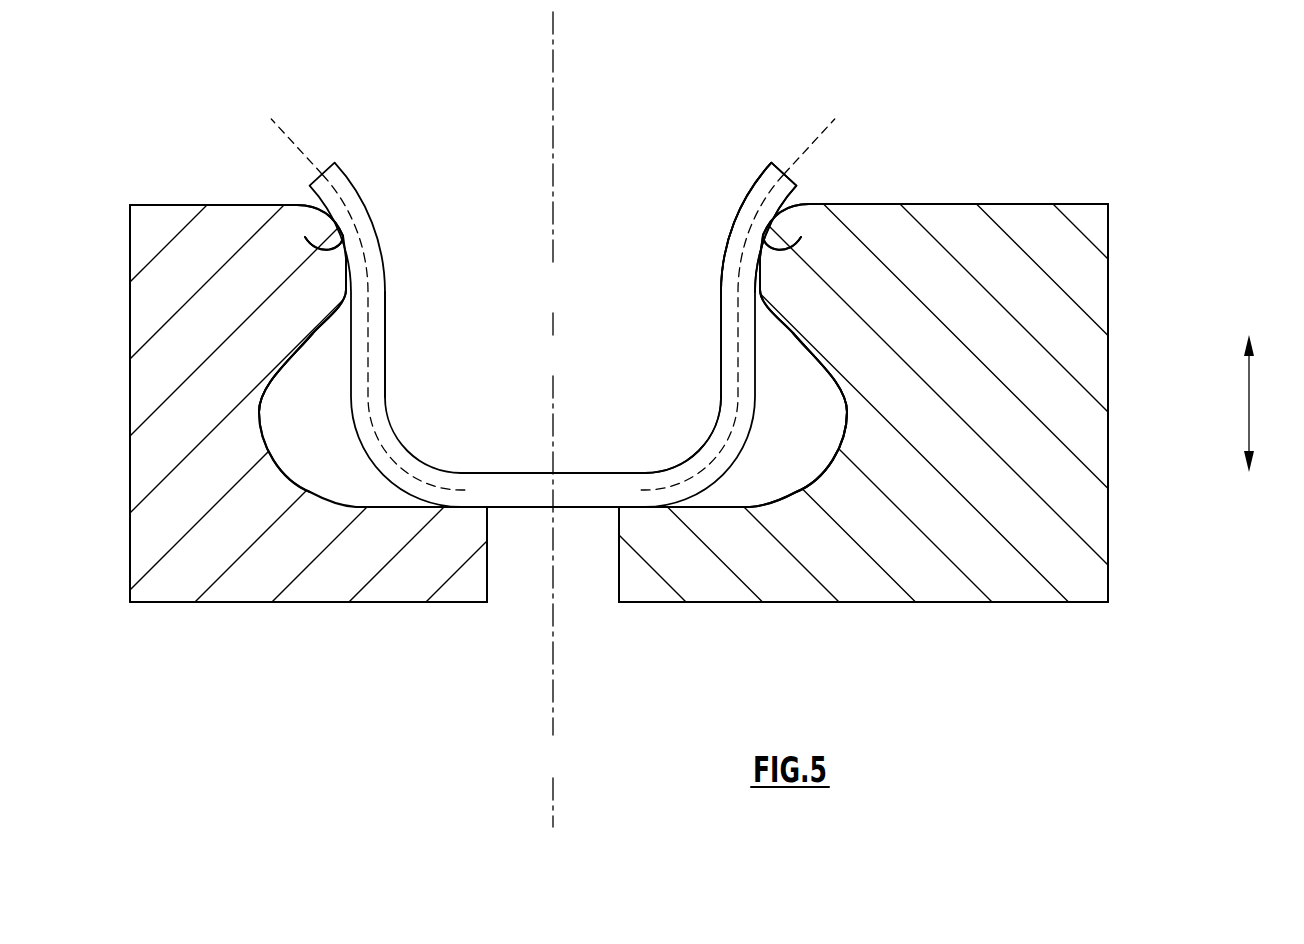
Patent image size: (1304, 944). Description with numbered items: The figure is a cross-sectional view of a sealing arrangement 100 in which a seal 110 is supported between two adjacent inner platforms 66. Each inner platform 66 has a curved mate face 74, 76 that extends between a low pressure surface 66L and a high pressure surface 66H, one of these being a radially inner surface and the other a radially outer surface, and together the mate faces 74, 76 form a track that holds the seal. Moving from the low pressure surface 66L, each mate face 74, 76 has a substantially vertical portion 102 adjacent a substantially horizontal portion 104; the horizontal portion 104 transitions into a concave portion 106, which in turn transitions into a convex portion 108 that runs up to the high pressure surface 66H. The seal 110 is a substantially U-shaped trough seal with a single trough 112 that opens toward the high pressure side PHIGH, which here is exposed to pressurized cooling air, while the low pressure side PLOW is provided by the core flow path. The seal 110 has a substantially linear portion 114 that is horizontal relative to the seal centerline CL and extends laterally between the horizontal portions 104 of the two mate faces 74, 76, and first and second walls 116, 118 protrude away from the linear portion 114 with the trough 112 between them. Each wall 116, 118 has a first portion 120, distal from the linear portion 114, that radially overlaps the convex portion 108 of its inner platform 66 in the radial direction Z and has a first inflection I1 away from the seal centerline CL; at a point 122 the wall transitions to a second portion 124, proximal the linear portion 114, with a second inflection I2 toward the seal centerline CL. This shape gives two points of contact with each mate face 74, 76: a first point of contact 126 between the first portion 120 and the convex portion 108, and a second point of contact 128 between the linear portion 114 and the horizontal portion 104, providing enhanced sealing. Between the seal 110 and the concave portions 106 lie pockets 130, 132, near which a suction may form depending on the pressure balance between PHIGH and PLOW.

The sealing arrangement 100 is at (652, 422).
The inner platform 66 is at (152, 370).
The high pressure surface 66H is at (150, 205).
The low pressure surface 66L is at (166, 603).
The substantially horizontal portion 104 is at (384, 508).
The second point of contact 128 is at (463, 508).
The substantially vertical portion 102 is at (488, 543).
The first point of contact 126 is at (309, 236).
The convex portion 108 is at (759, 220).
The concave portion 106 is at (843, 430).
The mate face 74 is at (803, 342).
The mate face 76 is at (315, 332).
The pocket 130 is at (313, 412).
The pocket 132 is at (805, 414).
The seal 110 is at (716, 282).
The first portion 120 is at (763, 162).
The first wall 116 is at (729, 236).
The transition point 122 is at (722, 315).
The second wall 118 is at (385, 251).
The second portion 124 is at (690, 437).
The substantially linear portion 114 is at (588, 473).
The trough 112 is at (572, 371).
The first inflection I1 is at (814, 143).
The second inflection I2 is at (733, 405).
The radial direction Z is at (1250, 405).
The seal centerline CL is at (553, 797).
The high pressure side PHIGH is at (592, 305).
The low pressure side PLOW is at (585, 770).